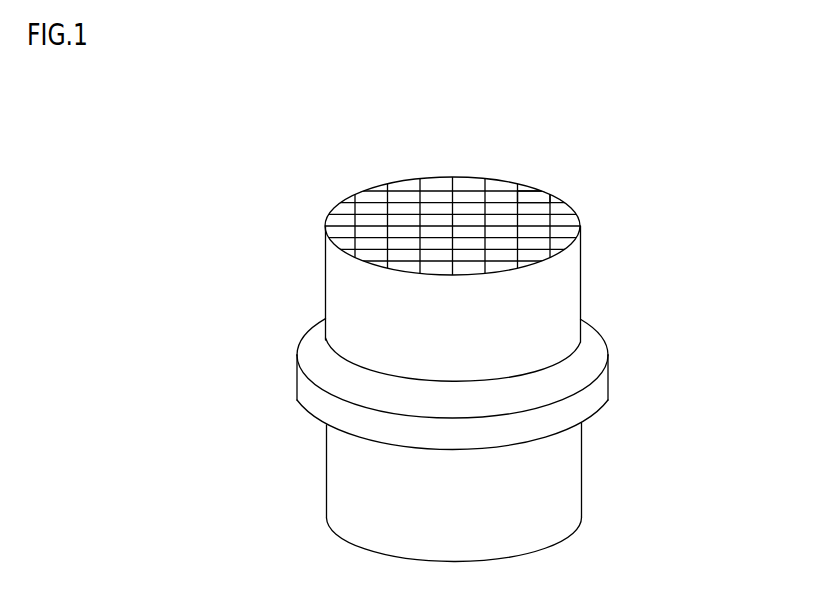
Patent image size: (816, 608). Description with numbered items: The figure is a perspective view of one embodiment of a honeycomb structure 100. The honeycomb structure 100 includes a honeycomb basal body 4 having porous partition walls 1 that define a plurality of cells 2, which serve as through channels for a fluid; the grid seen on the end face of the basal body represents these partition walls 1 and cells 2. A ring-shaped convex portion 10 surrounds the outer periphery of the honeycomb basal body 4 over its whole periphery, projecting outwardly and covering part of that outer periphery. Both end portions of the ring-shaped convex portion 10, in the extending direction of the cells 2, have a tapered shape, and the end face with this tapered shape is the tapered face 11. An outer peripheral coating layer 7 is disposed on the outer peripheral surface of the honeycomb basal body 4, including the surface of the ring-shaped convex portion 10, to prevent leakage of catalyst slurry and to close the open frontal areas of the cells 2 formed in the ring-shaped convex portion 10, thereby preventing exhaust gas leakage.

The honeycomb structure 100 is at (593, 71).
The partition walls 1 is at (352, 243).
The cells 2 is at (368, 197).
The honeycomb basal body 4 is at (533, 198).
The outer peripheral coating layer 7 is at (570, 300).
The ring-shaped convex portion 10 is at (622, 388).
The tapered face 11 is at (312, 345).